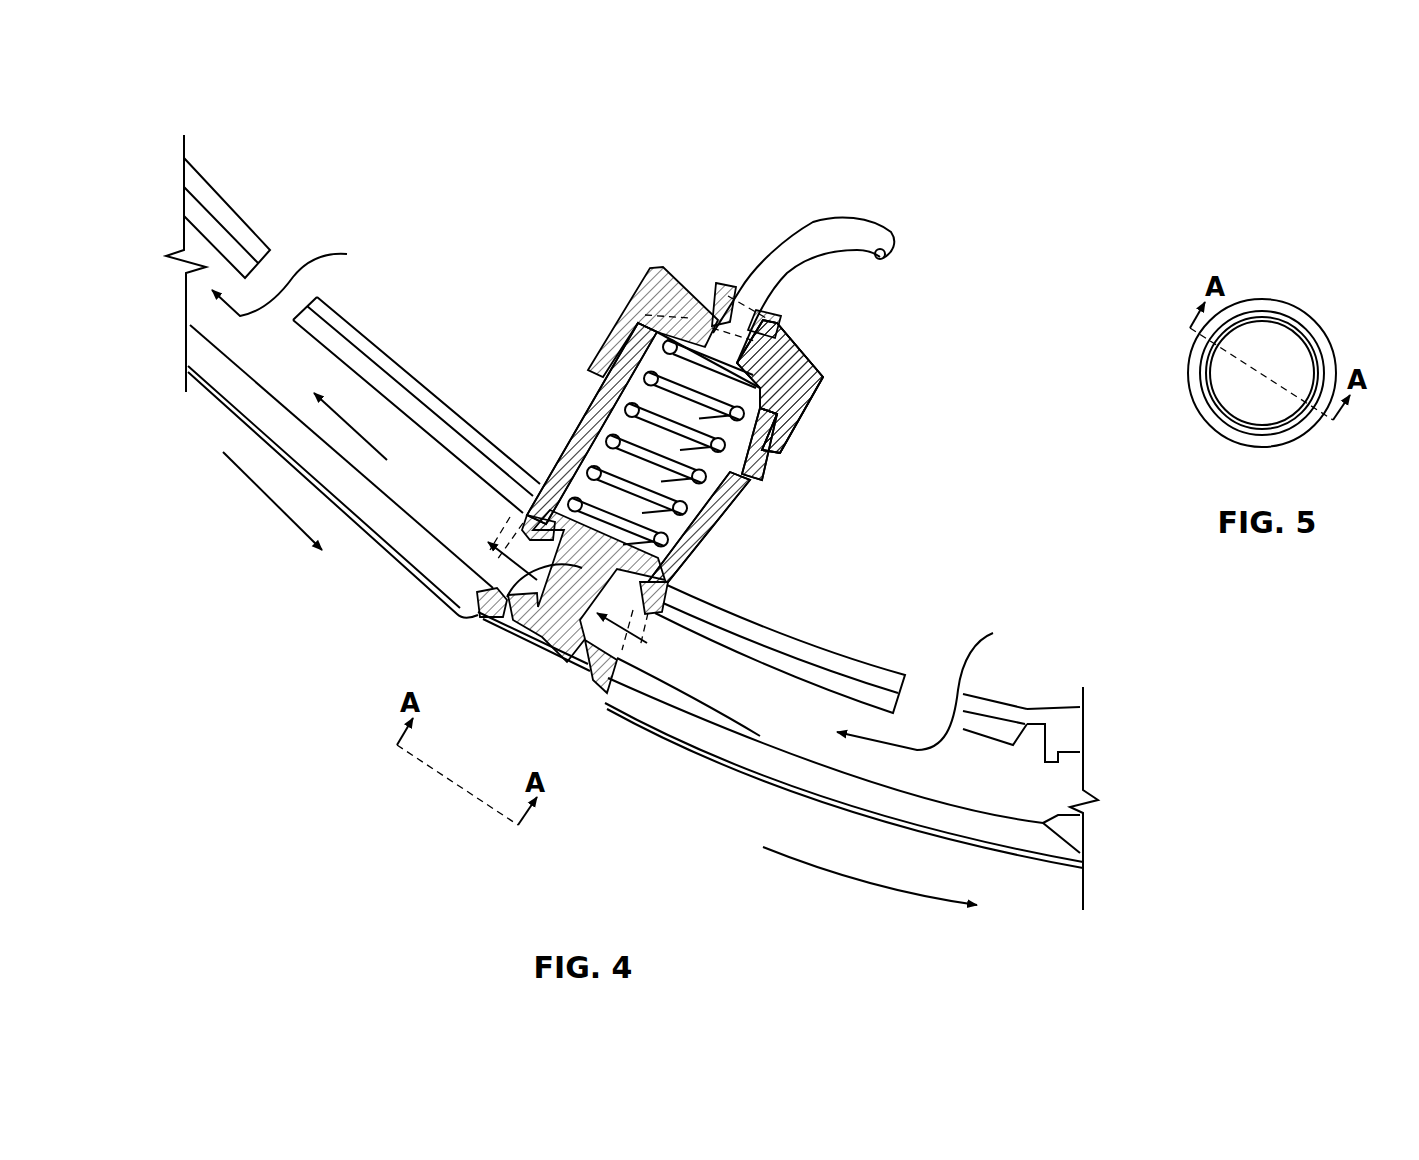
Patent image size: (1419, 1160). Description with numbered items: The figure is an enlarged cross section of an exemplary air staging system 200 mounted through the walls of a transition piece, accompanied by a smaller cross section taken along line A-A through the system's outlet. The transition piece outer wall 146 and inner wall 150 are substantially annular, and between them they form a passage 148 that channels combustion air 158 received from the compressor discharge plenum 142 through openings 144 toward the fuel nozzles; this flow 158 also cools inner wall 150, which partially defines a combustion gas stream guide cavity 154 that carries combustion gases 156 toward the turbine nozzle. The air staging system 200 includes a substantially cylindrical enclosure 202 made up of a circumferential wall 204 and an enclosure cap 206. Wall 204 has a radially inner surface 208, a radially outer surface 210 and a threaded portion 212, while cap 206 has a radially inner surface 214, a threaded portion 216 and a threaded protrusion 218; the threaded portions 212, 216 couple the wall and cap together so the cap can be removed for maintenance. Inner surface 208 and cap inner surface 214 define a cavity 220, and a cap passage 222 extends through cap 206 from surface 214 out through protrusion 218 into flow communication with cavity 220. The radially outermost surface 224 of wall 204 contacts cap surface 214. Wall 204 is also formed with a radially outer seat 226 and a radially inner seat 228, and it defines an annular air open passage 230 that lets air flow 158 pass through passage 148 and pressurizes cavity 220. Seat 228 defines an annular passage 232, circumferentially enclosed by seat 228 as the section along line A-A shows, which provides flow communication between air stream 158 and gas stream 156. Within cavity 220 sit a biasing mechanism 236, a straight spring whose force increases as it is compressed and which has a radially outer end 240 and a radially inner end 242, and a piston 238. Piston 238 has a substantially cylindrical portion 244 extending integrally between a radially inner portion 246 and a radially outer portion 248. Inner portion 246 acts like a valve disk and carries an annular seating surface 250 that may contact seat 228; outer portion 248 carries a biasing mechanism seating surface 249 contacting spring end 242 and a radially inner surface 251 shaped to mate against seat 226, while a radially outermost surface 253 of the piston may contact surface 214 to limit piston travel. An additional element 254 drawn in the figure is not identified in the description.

In FIG. 4, the compressor discharge plenum 142 is at (326, 166).
In FIG. 4, the openings 144 is at (293, 298).
In FIG. 4, the transition piece outer wall 146 is at (413, 387).
In FIG. 4, the passage 148 is at (254, 379).
In FIG. 4, the inner wall 150 is at (225, 402).
In FIG. 4, the combustion gas stream guide cavity 154 is at (169, 479).
In FIG. 4, the combustion gases 156 is at (287, 518).
In FIG. 4, the combustion air 158 is at (318, 254).
In FIG. 4, the air staging system 200 is at (712, 108).
In FIG. 4, the enclosure 202 is at (598, 300).
In FIG. 4, the circumferential wall 204 is at (583, 441).
In FIG. 4, the enclosure cap 206 is at (677, 322).
In FIG. 4, the radially inner surface 208 is at (602, 383).
In FIG. 4, the radially outer surface 210 is at (583, 445).
In FIG. 4, the threaded portion 212 is at (742, 482).
In FIG. 4, the radially inner surface 214 is at (782, 340).
In FIG. 4, the threaded portion 216 is at (785, 452).
In FIG. 4, the threaded protrusion 218 is at (721, 298).
In FIG. 4, the cavity 220 is at (823, 375).
In FIG. 4, the cap passage 222 is at (692, 292).
In FIG. 4, the radially outermost surface 224 is at (810, 400).
In FIG. 4, the radially outer seat 226 is at (660, 590).
In FIG. 4, the radially inner seat 228 is at (602, 690).
In FIG. 5, the radially inner seat 228 is at (1297, 430).
In FIG. 4, the annular air open passage 230 is at (486, 528).
In FIG. 4, the annular passage 232 is at (517, 645).
In FIG. 5, the annular passage 232 is at (1220, 385).
In FIG. 4, the biasing mechanism 236 is at (614, 345).
In FIG. 4, the piston 238 is at (725, 507).
In FIG. 4, the radially outer end 240 is at (760, 360).
In FIG. 4, the radially inner end 242 is at (683, 560).
In FIG. 4, the substantially cylindrical portion 244 is at (462, 610).
In FIG. 4, the radially inner portion 246 is at (665, 672).
In FIG. 4, the radially outer portion 248 is at (690, 530).
In FIG. 4, the biasing mechanism seating surface 249 is at (553, 627).
In FIG. 4, the annular seating surface 250 is at (485, 612).
In FIG. 4, the radially inner surface 251 is at (543, 505).
In FIG. 4, the radially outermost surface 253 is at (605, 403).
In FIG. 4, the supply tube 254 is at (827, 228).